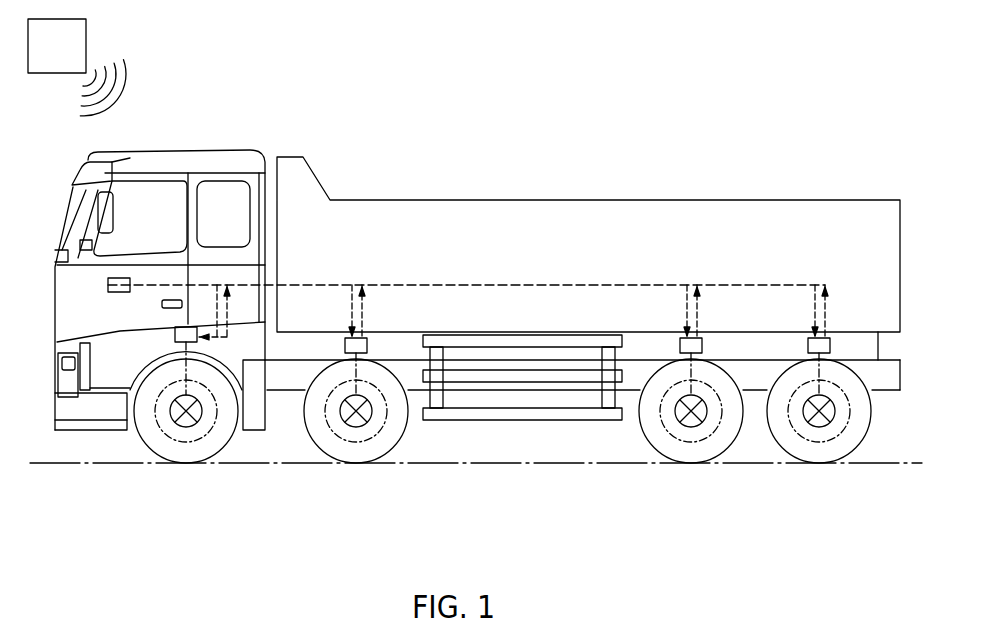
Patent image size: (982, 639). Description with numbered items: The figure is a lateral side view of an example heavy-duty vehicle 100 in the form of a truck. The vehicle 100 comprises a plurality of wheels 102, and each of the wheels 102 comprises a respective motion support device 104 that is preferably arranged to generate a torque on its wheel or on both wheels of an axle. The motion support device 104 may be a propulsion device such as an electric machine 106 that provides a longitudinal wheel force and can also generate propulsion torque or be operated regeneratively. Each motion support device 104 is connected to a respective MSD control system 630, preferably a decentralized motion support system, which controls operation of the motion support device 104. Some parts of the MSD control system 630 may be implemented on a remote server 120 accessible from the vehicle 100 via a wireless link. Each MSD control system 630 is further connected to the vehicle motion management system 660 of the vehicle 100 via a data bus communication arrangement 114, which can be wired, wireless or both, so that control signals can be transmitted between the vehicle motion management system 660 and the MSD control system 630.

The vehicle 100 is at (512, 90).
The wheels 102 is at (180, 448).
The motion support device 104 is at (186, 427).
The electric machine 106 is at (170, 412).
The data bus communication arrangement 114 is at (556, 285).
The remote server 120 is at (86, 46).
The MSD control system 630 is at (175, 335).
The vehicle motion management system 660 is at (108, 285).